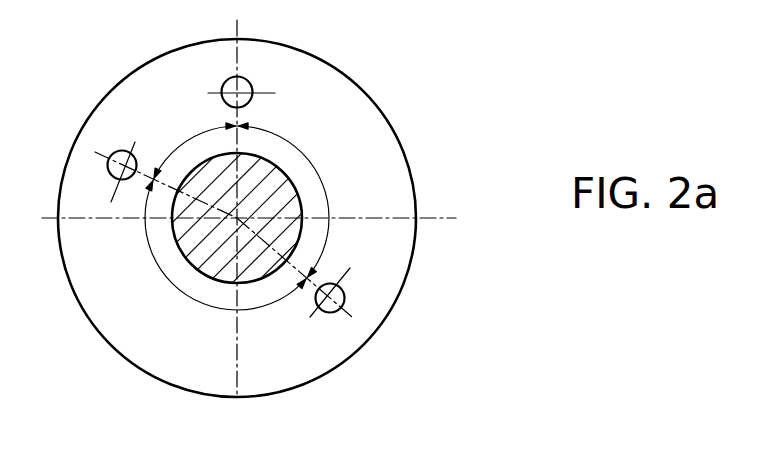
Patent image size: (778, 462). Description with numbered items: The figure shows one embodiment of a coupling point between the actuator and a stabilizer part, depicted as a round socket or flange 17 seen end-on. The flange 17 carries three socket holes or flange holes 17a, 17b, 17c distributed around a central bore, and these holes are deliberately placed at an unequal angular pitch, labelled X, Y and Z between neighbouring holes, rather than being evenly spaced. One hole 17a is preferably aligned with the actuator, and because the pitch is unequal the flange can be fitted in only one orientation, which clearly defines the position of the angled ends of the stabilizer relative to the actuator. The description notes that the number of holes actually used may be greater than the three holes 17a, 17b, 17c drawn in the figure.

The flange 17 is at (455, 123).
The flange hole 17a is at (248, 88).
The flange hole 17b is at (115, 170).
The flange hole 17c is at (331, 312).